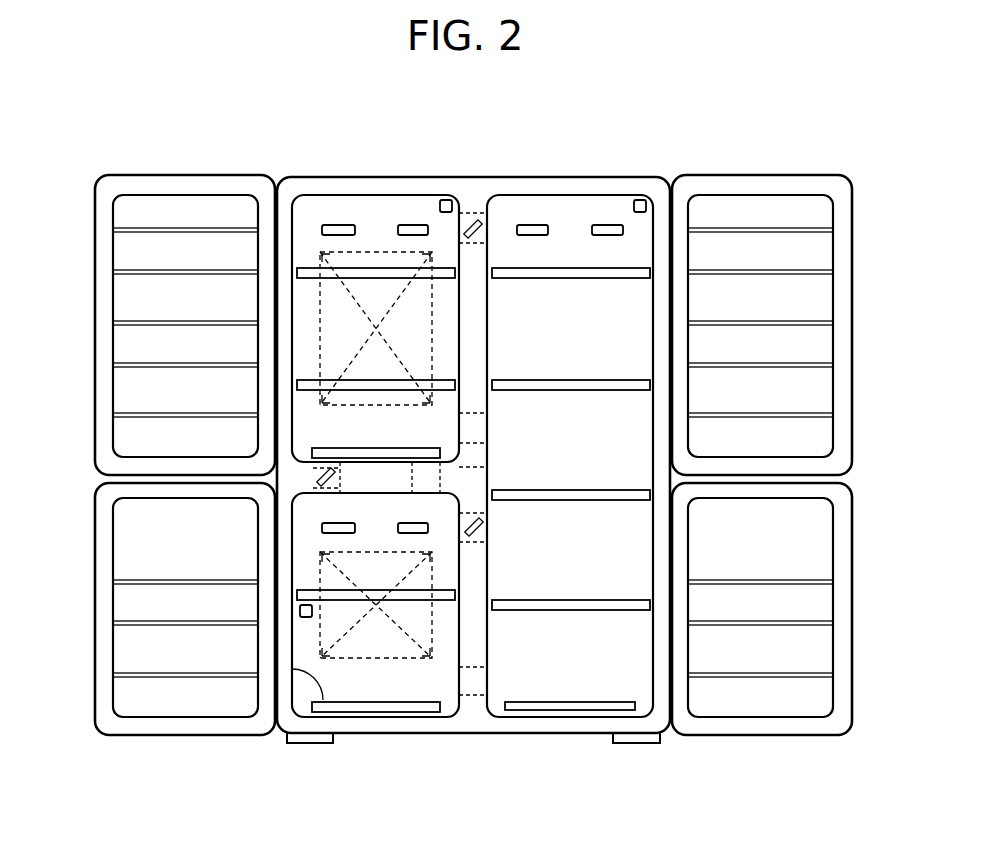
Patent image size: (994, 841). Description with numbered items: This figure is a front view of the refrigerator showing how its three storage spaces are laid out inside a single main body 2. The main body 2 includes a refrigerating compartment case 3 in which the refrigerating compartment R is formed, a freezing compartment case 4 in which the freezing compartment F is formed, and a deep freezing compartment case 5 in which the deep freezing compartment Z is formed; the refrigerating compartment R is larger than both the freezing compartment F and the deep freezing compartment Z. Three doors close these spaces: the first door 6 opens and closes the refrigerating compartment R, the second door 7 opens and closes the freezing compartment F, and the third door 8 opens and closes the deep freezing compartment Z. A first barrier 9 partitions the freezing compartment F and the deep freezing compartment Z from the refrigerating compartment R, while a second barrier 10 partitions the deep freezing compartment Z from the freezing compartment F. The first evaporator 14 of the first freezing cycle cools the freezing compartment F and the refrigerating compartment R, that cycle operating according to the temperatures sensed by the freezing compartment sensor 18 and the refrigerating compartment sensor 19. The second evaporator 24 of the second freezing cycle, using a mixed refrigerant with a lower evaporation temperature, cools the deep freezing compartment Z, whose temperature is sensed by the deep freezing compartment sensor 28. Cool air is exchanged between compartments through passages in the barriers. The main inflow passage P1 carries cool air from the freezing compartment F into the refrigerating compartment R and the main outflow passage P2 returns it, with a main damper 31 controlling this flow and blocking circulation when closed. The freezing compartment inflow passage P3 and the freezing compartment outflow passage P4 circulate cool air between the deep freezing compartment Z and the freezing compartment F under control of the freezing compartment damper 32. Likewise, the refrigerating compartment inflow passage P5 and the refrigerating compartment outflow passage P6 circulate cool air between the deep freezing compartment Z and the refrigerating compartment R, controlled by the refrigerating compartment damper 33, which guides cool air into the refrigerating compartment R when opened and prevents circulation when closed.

The main body 2 is at (590, 140).
The refrigerating compartment case 3 is at (570, 195).
The freezing compartment case 4 is at (376, 195).
The deep freezing compartment case 5 is at (323, 702).
The first door 6 is at (760, 725).
The second door 7 is at (183, 190).
The third door 8 is at (183, 725).
The first barrier 9 is at (474, 467).
The second barrier 10 is at (368, 475).
The first evaporator 14 is at (380, 217).
The freezing compartment sensor 18 is at (445, 200).
The refrigerating compartment sensor 19 is at (640, 200).
The second evaporator 24 is at (373, 658).
The deep freezing compartment sensor 28 is at (300, 608).
The main damper 31 is at (465, 213).
The freezing compartment damper 32 is at (303, 462).
The refrigerating compartment damper 33 is at (480, 530).
The freezing compartment F is at (351, 208).
The refrigerating compartment R is at (546, 208).
The deep freezing compartment Z is at (431, 683).
The main inflow passage P1 is at (472, 216).
The main outflow passage P2 is at (474, 413).
The freezing compartment inflow passage P3 is at (310, 478).
The freezing compartment outflow passage P4 is at (367, 443).
The refrigerating compartment inflow passage P5 is at (476, 545).
The refrigerating compartment outflow passage P6 is at (472, 700).